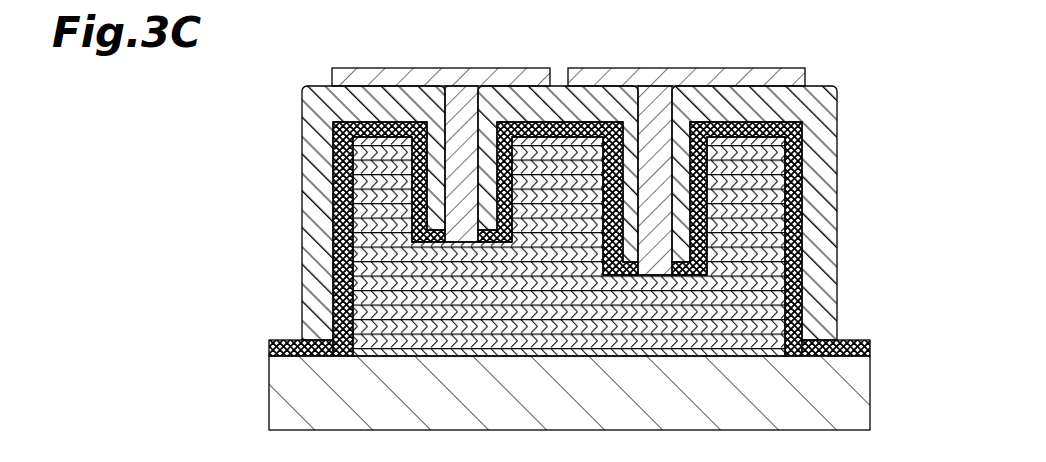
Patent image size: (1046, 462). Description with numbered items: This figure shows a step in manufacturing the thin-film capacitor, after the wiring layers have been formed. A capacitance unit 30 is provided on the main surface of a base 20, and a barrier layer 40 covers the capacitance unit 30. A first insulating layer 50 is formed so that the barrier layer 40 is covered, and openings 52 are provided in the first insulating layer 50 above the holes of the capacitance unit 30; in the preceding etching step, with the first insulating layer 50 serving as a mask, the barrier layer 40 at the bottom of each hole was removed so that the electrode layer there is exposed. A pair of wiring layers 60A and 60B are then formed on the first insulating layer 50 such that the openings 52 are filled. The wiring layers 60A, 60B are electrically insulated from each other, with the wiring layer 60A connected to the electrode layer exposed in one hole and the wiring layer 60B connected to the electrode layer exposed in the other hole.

The base 20 is at (855, 393).
The capacitance unit 30 is at (785, 192).
The barrier layer 40 is at (870, 340).
The first insulating layer 50 is at (318, 92).
The openings 52 is at (460, 107).
The wiring layer 60A is at (423, 68).
The wiring layer 60B is at (717, 68).